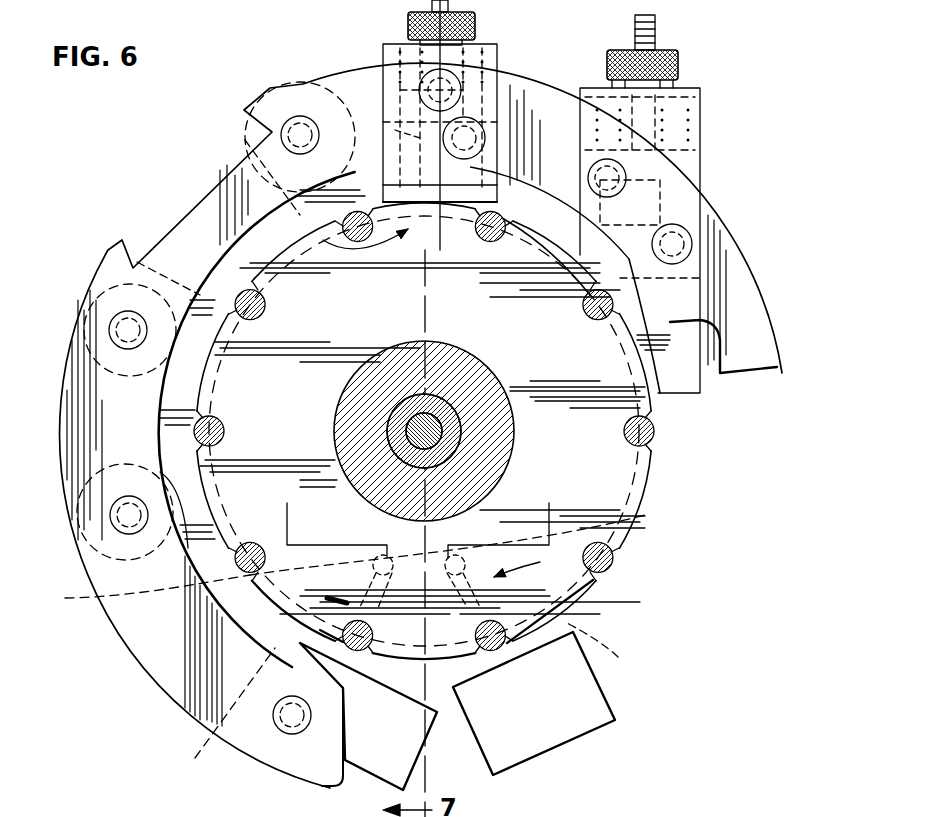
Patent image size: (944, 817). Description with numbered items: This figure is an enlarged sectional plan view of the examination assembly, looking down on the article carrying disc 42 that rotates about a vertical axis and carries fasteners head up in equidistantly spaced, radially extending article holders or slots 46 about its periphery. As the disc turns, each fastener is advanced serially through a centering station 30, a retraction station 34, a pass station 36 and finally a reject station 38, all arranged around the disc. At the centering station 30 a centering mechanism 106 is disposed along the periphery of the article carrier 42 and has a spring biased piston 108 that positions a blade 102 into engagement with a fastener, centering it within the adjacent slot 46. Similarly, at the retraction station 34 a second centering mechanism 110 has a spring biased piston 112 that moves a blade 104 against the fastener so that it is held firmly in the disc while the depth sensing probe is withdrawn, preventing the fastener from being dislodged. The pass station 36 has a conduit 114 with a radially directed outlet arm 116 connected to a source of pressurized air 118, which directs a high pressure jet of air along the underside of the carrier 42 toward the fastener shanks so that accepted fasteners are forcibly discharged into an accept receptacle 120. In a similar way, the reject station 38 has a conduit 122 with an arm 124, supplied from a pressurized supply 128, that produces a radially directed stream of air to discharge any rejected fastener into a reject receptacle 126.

The centering station 30 is at (577, 327).
The retraction station 34 is at (380, 300).
The pass station 36 is at (340, 613).
The reject station 38 is at (592, 562).
The article carrying disc 42 is at (613, 467).
The article holders/slots 46 is at (597, 578).
The blade 102 is at (670, 362).
The blade 104 is at (640, 248).
The centering mechanism 106 is at (700, 140).
The spring biased piston 108 is at (690, 173).
The second centering mechanism 110 is at (497, 52).
The spring biased piston 112 is at (383, 128).
The conduit 114 is at (136, 593).
The radially directed outlet arm 116 is at (216, 710).
The source of pressurized air 118 is at (302, 500).
The accept receptacle 120 is at (398, 729).
The conduit 122 is at (632, 528).
The arm 124 is at (612, 647).
The reject receptacle 126 is at (537, 744).
The pressurized supply 128 is at (572, 502).